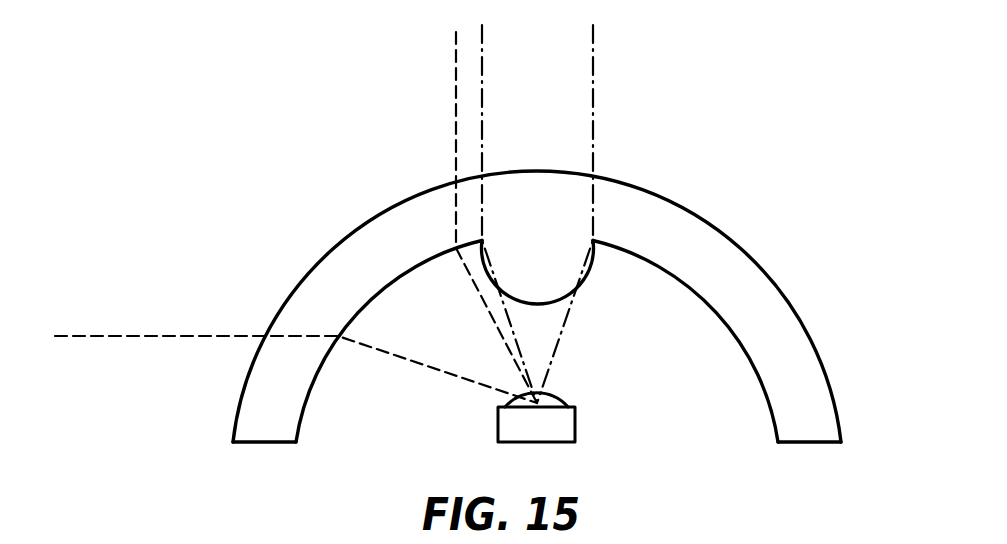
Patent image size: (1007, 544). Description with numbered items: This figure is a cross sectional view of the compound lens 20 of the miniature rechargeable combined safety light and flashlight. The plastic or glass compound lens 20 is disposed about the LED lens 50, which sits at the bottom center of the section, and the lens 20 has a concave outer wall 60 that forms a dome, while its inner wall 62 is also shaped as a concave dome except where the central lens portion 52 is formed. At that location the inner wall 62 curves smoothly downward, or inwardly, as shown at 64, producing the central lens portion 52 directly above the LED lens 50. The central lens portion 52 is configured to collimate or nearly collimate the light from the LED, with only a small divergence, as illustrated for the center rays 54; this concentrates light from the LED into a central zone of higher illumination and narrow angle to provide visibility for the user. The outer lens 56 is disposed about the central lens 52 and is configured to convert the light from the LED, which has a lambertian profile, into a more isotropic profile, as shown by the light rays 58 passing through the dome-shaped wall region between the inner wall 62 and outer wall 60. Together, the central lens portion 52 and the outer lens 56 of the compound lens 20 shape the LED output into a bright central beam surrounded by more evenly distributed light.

The compound lens 20 is at (628, 113).
The LED lens 50 is at (558, 397).
The central lens portion 52 is at (532, 260).
The center rays 54 is at (515, 350).
The outer lens 56 is at (641, 202).
The light rays 58 is at (484, 302).
The concave outer wall 60 is at (247, 378).
The inner wall 62 is at (304, 406).
The inward curve of inner wall 64 is at (540, 293).